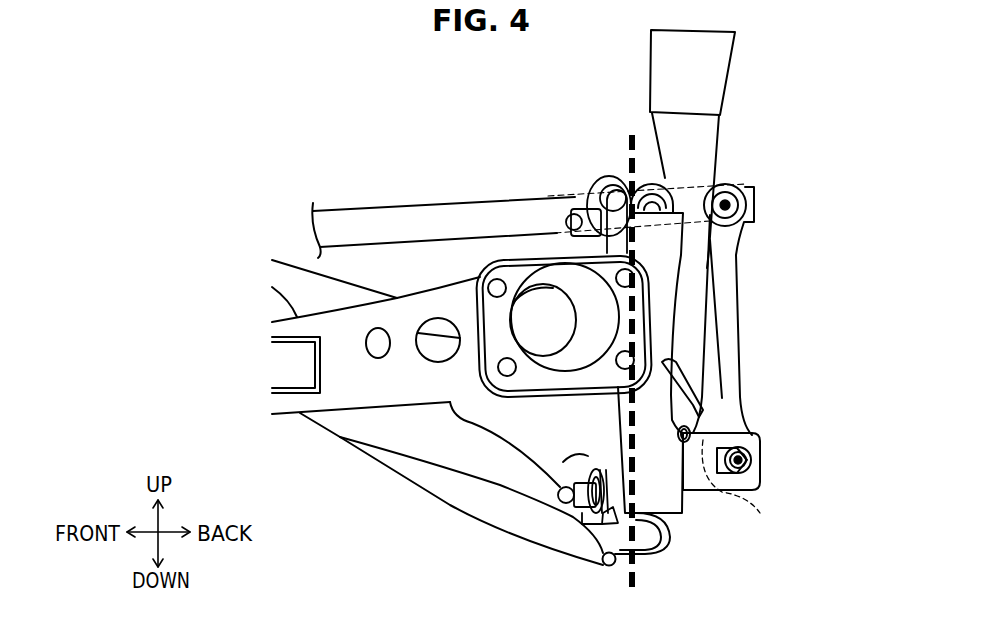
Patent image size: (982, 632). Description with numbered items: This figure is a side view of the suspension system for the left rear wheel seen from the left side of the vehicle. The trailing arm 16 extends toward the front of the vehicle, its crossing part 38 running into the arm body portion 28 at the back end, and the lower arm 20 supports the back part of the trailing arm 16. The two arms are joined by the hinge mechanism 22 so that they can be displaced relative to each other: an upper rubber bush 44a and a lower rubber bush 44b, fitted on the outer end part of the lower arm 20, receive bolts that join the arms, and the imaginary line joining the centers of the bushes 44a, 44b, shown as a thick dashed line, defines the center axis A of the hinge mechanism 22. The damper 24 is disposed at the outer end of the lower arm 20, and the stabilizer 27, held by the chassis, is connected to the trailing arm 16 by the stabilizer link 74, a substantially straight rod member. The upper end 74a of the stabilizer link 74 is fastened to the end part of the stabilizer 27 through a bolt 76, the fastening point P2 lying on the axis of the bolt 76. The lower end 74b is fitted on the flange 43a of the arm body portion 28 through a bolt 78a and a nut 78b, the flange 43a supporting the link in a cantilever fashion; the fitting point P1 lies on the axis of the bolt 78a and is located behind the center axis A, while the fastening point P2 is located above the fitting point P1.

The trailing arm 16 is at (336, 415).
The lower arm 20 is at (395, 482).
The hinge mechanism 22 is at (667, 178).
The damper 24 is at (738, 83).
The stabilizer 27 is at (412, 205).
The arm body portion 28 is at (655, 405).
The crossing part 38 is at (348, 322).
The flange 43a is at (763, 475).
The upper rubber bush 44a is at (583, 190).
The lower rubber bush 44b is at (573, 513).
The stabilizer link 74 is at (748, 320).
The upper end of the stabilizer link 74a is at (725, 185).
The lower end of the stabilizer link 74b is at (760, 513).
The bolt 76 is at (735, 207).
The bolt 78a is at (742, 458).
The nut 78b is at (723, 474).
The fitting point P1 is at (745, 462).
The fastening point P2 is at (730, 207).
The center axis A is at (630, 164).